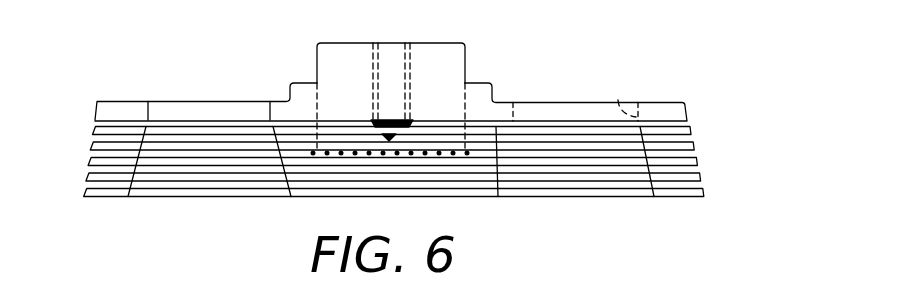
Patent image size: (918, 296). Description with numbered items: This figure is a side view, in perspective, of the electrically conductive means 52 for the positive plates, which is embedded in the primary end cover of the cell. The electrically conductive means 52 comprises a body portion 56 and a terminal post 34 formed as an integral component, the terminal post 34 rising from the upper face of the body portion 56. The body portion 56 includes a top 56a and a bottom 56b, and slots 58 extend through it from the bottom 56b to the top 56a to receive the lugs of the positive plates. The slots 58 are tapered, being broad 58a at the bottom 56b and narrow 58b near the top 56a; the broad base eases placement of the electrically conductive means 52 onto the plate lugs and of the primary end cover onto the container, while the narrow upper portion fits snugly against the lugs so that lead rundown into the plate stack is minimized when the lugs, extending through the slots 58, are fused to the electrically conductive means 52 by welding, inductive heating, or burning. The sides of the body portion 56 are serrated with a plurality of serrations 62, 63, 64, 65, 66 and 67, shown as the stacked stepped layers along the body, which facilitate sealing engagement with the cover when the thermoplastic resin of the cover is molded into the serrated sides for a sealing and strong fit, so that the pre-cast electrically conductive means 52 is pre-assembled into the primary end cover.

The electrically conductive means 52 is at (136, 60).
The terminal post 34 is at (461, 48).
The body portion 56 is at (681, 103).
The top 56a is at (512, 102).
The bottom 56b is at (680, 198).
The slots 58 is at (582, 123).
The broad portion of slot 58a is at (653, 197).
The narrow portion of slot 58b is at (618, 100).
The serration 62 is at (689, 122).
The serration 63 is at (688, 136).
The serration 64 is at (693, 152).
The serration 65 is at (697, 172).
The serration 66 is at (702, 183).
The serration 67 is at (703, 193).